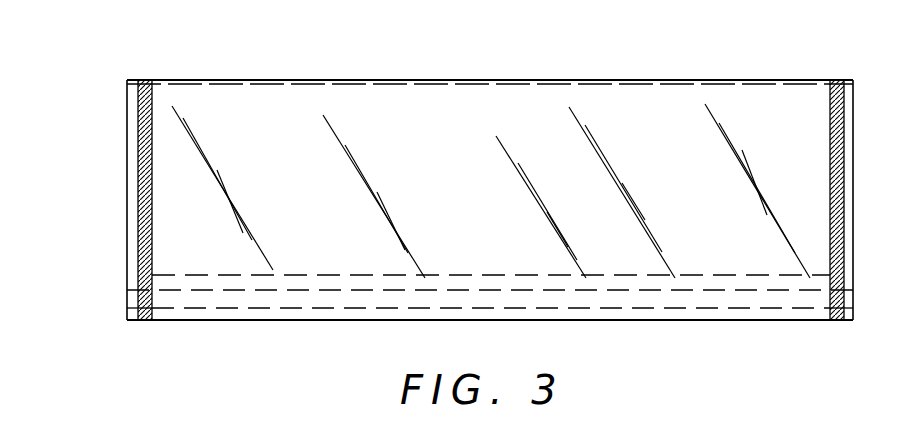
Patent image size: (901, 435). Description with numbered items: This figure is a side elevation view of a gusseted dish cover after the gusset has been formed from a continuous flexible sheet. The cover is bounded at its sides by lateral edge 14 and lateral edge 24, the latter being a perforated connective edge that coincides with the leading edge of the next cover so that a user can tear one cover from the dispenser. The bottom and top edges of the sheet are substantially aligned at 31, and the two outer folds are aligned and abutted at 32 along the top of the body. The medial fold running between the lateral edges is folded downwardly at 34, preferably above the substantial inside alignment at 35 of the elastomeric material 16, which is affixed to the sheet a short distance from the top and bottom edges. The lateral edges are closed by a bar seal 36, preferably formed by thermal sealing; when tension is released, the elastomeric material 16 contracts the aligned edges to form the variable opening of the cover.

The lateral edge 14 is at (853, 140).
The elastomeric material 16 is at (178, 300).
The lateral edge 24 is at (123, 268).
The alignment of bottom edge and top edge 31 is at (392, 320).
The abutment of folds 32 is at (428, 80).
The downward fold 34 is at (351, 273).
The inside alignment of elastomeric material 35 is at (291, 292).
The bar seal 36 is at (152, 196).